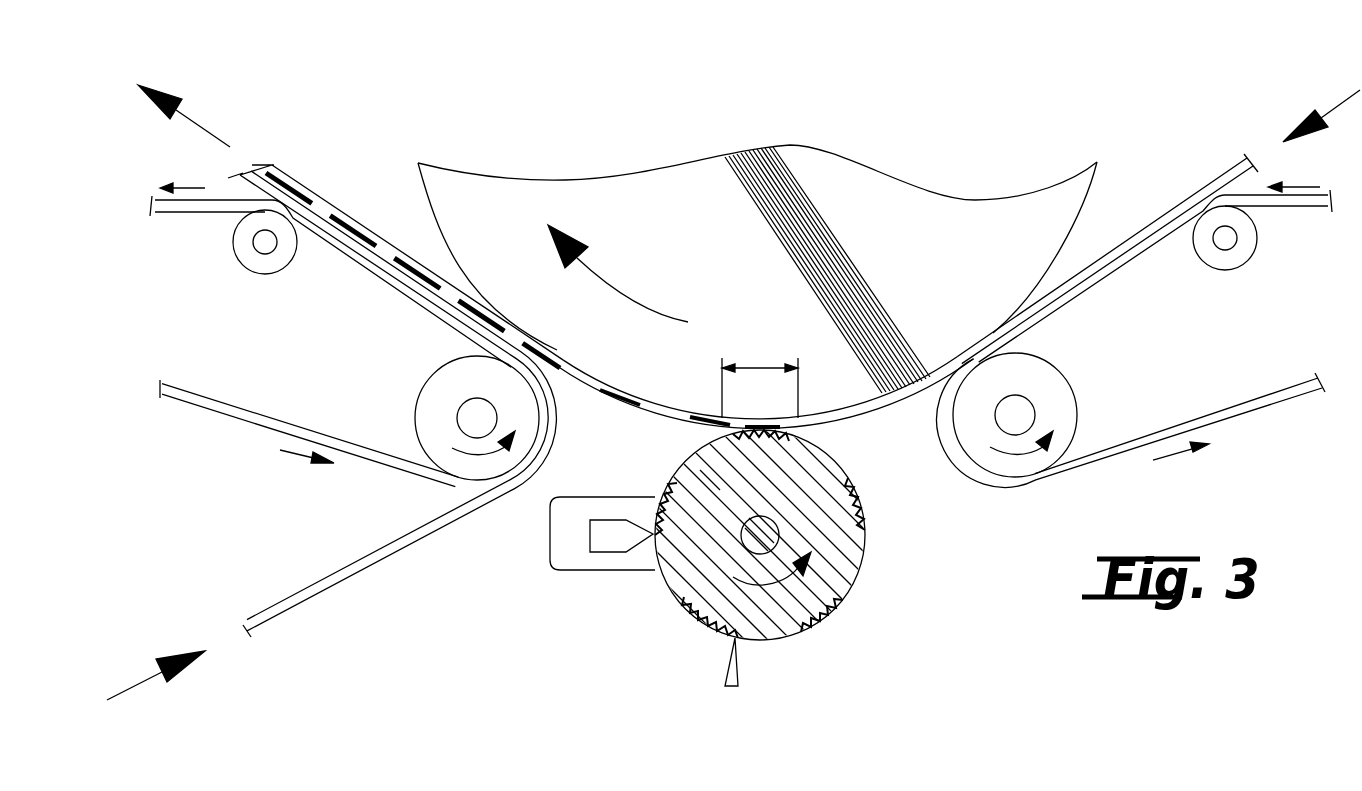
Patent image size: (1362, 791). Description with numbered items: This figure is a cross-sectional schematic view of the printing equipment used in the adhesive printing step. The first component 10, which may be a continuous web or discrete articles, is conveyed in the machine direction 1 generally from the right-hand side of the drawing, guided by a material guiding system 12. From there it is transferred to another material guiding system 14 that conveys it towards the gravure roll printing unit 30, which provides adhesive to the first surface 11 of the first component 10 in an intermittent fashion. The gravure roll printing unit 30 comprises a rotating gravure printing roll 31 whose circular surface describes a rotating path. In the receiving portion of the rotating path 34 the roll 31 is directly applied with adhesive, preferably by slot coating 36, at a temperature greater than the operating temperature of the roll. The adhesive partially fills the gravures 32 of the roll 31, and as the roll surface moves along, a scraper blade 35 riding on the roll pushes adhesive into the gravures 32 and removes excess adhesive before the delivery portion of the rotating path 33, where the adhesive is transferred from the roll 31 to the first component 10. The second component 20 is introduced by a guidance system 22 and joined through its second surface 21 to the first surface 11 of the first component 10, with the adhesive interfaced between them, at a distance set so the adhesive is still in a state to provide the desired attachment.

The machine direction 1 is at (203, 126).
The first component 10 is at (1217, 182).
The first surface 11 is at (886, 412).
The material guiding system 12 is at (1258, 430).
The material guiding system 14 is at (880, 196).
The second component 20 is at (384, 555).
The second surface 21 is at (326, 595).
The guidance system 22 is at (238, 440).
The gravure roll printing unit 30 is at (774, 475).
The rotating gravure printing roll 31 is at (688, 556).
The gravures 32 is at (660, 495).
The delivery portion of the rotating path 33 is at (760, 362).
The receiving portion of the rotating path 34 is at (552, 540).
The scraper blade 35 is at (740, 676).
The slot coating 36 is at (617, 538).